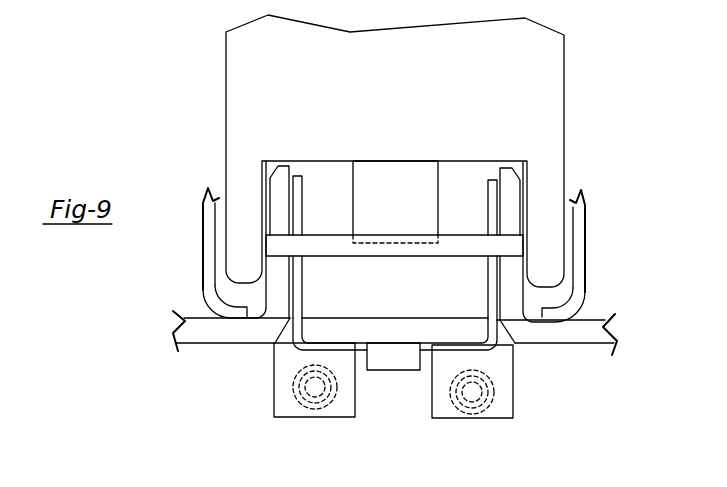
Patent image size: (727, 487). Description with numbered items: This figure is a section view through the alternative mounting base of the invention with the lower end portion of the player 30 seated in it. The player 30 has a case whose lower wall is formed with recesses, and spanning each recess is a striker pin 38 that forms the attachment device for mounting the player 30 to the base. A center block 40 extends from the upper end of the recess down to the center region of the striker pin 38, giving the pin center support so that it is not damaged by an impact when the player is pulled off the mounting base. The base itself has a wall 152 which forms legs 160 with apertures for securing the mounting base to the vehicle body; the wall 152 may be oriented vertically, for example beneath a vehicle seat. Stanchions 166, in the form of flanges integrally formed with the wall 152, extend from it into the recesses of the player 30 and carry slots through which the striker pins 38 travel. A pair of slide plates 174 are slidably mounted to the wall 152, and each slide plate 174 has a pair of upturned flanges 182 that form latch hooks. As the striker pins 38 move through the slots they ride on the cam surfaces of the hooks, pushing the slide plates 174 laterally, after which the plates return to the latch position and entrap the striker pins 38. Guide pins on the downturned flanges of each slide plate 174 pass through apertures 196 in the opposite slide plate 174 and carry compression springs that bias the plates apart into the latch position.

The player 30 is at (570, 164).
The striker pin 38 is at (323, 244).
The center block 40 is at (440, 190).
The wall 152 is at (552, 332).
The leg 160 is at (516, 183).
The stanchion 166 is at (283, 180).
The slide plate 174 is at (447, 351).
The upturned flange 182 is at (300, 194).
The aperture 196 is at (313, 387).